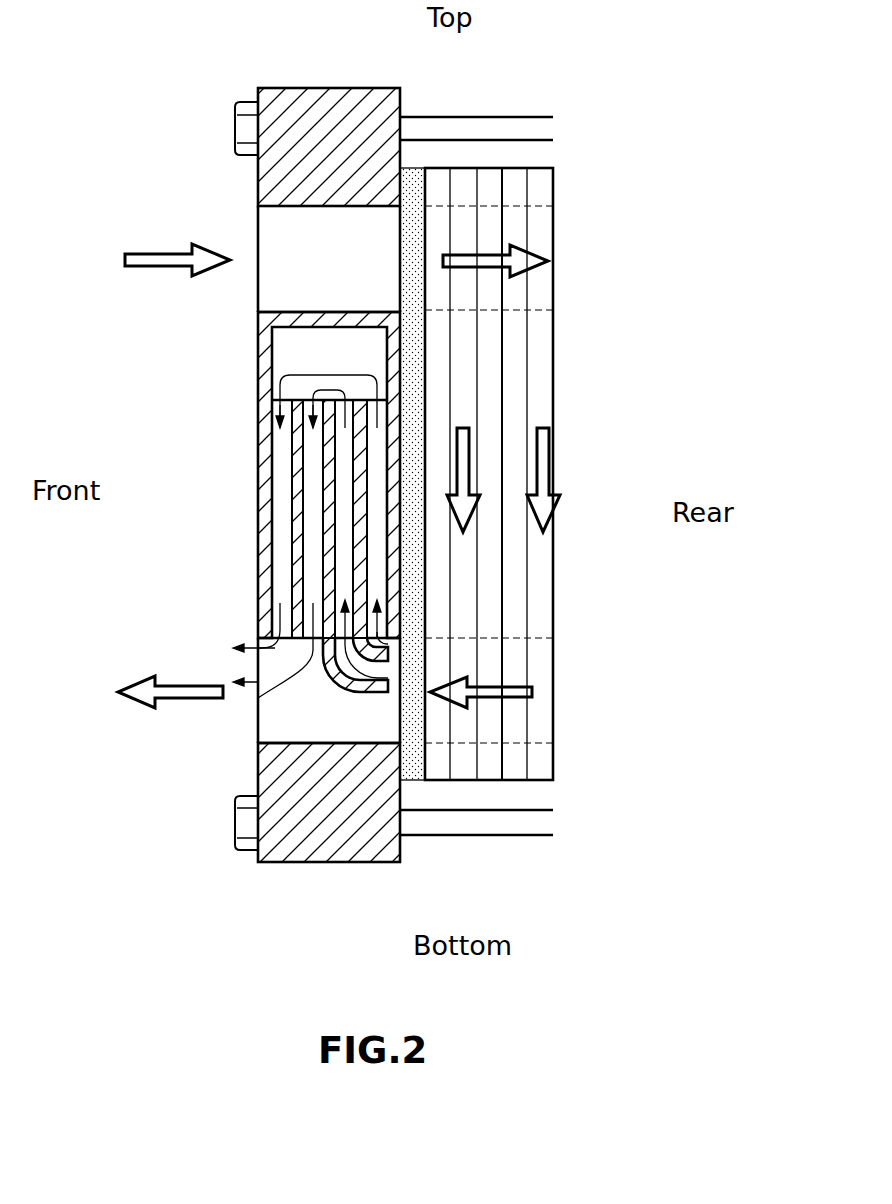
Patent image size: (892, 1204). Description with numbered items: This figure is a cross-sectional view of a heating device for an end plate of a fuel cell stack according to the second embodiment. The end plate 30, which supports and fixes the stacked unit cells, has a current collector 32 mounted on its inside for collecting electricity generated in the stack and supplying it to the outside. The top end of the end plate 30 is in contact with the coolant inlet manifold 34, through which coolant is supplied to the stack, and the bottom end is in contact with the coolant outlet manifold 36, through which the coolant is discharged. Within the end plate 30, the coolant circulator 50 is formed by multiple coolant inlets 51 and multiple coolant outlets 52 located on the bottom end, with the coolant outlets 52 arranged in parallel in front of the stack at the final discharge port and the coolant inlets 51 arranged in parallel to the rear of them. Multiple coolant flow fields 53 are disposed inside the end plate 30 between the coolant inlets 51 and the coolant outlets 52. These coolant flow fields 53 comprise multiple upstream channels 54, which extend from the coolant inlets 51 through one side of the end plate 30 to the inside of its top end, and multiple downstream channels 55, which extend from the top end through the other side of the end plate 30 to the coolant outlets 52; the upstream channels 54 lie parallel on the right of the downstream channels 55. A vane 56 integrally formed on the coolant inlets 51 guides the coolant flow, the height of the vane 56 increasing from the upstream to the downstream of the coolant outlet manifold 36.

The end plate 30 is at (330, 863).
The current collector 32 is at (415, 363).
The coolant inlet manifold 34 is at (300, 206).
The coolant outlet manifold 36 is at (340, 730).
The coolant circulator 50 is at (258, 543).
The coolant inlets 51 is at (360, 602).
The coolant outlets 52 is at (318, 660).
The coolant flow fields 53 is at (244, 421).
The upstream channels 54 is at (377, 487).
The downstream channels 55 is at (315, 455).
The vane 56 is at (400, 666).